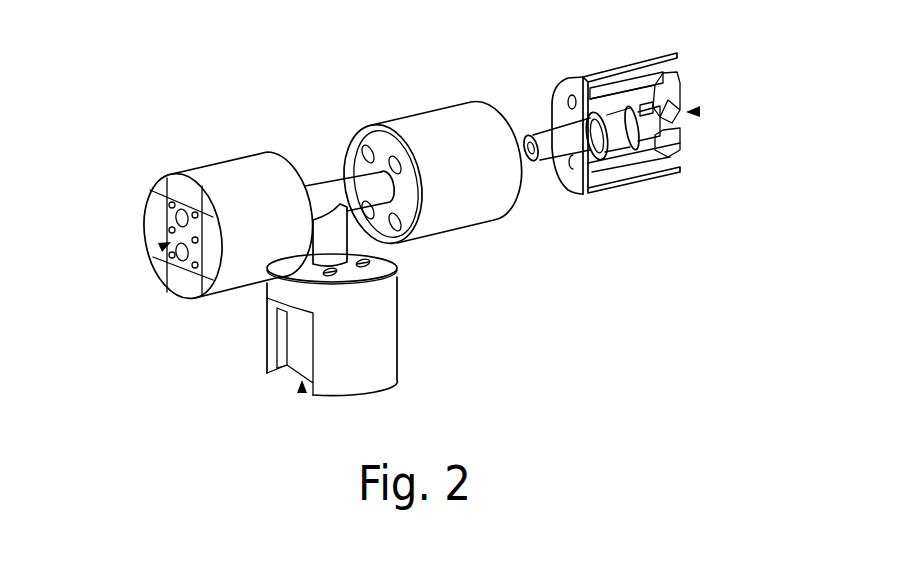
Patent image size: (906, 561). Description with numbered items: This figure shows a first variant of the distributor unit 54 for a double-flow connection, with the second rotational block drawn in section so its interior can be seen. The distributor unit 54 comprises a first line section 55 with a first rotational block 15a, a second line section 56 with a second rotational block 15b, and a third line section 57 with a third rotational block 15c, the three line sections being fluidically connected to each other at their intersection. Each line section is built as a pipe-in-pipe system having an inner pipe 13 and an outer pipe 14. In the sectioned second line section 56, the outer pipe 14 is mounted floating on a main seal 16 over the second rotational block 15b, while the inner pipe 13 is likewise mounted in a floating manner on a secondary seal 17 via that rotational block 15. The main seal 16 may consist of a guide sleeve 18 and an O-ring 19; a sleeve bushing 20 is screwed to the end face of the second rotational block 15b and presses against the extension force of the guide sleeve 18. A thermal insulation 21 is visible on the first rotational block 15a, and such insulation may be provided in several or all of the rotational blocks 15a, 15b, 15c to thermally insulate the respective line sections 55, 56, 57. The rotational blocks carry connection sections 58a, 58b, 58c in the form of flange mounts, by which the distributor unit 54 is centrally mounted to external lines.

The inner pipe 13 is at (537, 160).
The outer pipe 14 is at (565, 157).
The rotational block 15 is at (683, 123).
The first rotational block 15a is at (267, 360).
The second rotational block 15b is at (683, 83).
The third rotational block 15c is at (188, 274).
The main seal 16 is at (613, 157).
The secondary seal 17 is at (678, 135).
The guide sleeve 18 is at (607, 147).
The O-ring 19 is at (640, 112).
The sleeve bushing 20 is at (230, 177).
The thermal insulation 21 is at (282, 358).
The distributor unit 54 is at (283, 78).
The first line section 55 is at (375, 240).
The second line section 56 is at (362, 187).
The third line section 57 is at (317, 193).
The connection section 58a is at (302, 392).
The connection section 58b is at (698, 111).
The connection section 58c is at (160, 249).